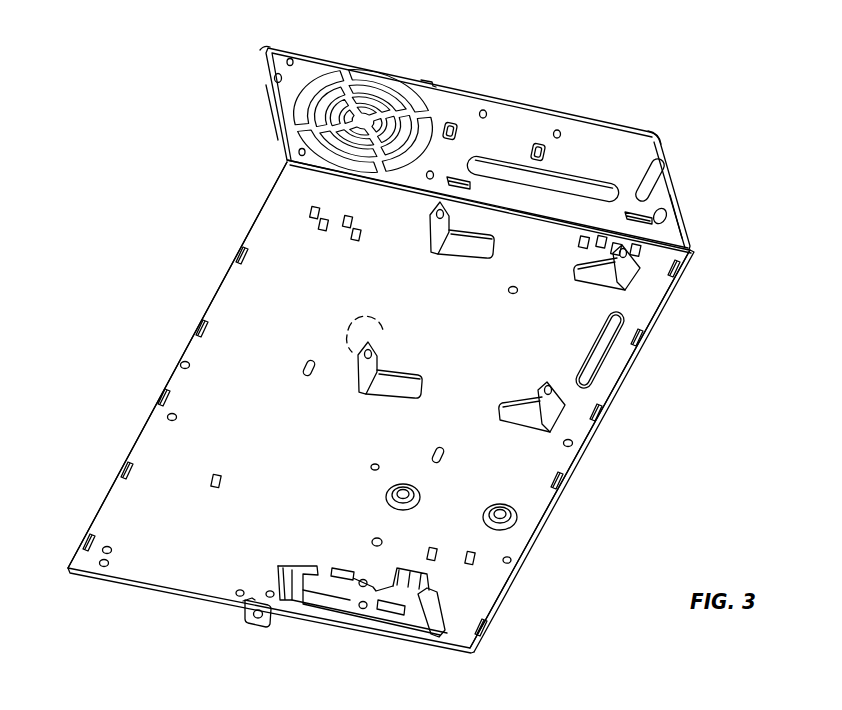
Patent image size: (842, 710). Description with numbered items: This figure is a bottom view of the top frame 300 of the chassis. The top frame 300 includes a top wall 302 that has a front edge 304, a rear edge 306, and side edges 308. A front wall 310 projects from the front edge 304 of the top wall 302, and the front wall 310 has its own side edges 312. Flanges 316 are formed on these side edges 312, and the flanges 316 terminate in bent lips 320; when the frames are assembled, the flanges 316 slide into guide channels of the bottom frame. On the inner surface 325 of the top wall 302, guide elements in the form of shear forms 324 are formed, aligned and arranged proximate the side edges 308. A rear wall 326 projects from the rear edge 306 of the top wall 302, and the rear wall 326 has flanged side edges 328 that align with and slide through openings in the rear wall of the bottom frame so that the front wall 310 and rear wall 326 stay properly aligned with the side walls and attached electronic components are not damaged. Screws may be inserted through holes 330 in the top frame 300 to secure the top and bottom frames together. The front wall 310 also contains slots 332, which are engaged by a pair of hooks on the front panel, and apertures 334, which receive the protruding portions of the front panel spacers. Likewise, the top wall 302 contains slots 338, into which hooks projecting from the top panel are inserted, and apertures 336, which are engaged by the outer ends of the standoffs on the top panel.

The top frame 300 is at (722, 60).
The top wall 302 is at (160, 572).
The front edge 304 is at (286, 158).
The rear edge 306 is at (98, 578).
The side edges 308 is at (178, 350).
The front wall 310 is at (566, 206).
The side edges 312 is at (275, 79).
The flanges 316 is at (268, 101).
The bent lips 320 is at (266, 48).
The shear forms 324 is at (233, 254).
The inner surface 325 is at (155, 448).
The rear wall 326 is at (418, 618).
The flanged side edges 328 is at (279, 564).
The holes 330 is at (575, 443).
The slots 332 is at (448, 184).
The apertures 334 is at (536, 142).
The apertures 336 is at (316, 342).
The slots 338 is at (224, 491).